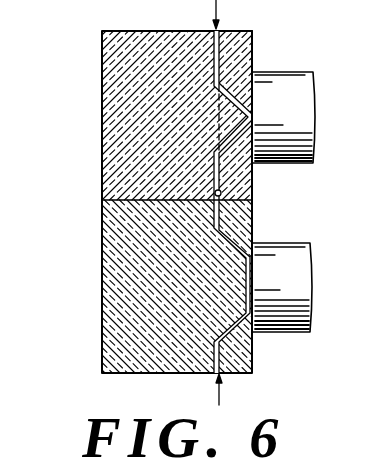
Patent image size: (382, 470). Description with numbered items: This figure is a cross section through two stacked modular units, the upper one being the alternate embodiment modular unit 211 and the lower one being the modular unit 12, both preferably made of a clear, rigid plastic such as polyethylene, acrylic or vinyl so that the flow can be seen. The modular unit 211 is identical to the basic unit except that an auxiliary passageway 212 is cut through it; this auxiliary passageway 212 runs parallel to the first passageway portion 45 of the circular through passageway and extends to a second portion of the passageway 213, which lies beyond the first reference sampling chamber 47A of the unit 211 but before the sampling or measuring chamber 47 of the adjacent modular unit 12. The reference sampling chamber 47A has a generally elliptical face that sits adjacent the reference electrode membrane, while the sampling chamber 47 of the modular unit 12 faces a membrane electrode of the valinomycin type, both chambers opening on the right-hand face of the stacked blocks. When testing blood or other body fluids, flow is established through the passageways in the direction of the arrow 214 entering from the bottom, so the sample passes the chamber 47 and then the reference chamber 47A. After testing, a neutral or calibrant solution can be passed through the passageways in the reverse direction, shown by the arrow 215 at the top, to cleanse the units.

The modular unit 12 is at (102, 250).
The alternate embodiment modular unit 211 is at (102, 66).
The auxiliary passageway 212 is at (218, 98).
The second portion of the passageway 213 is at (222, 193).
The flow direction arrow 214 is at (222, 392).
The reverse flow arrow 215 is at (219, 5).
The first passageway portion 45 is at (222, 52).
The sampling or measuring chamber 47 is at (252, 281).
The reference sampling chamber 47A is at (252, 113).